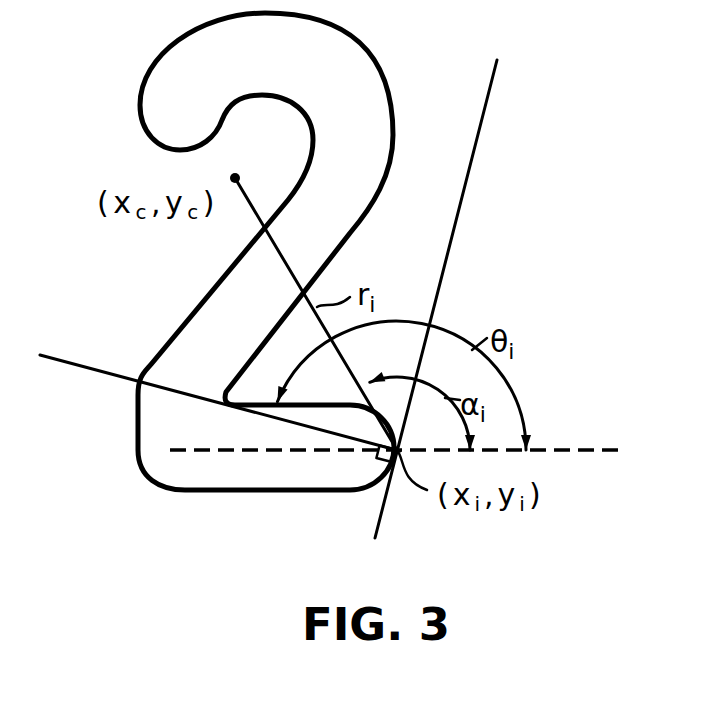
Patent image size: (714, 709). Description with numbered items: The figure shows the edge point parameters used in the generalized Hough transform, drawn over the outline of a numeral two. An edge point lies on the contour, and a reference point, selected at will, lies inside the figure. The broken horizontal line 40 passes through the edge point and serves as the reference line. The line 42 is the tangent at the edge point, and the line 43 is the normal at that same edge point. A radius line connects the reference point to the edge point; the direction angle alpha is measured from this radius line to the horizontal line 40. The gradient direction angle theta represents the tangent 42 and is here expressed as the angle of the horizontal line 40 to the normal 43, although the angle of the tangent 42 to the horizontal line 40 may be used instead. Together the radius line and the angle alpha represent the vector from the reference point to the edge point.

The horizontal line 40 is at (587, 448).
The tangent 42 is at (473, 150).
The normal 43 is at (90, 368).